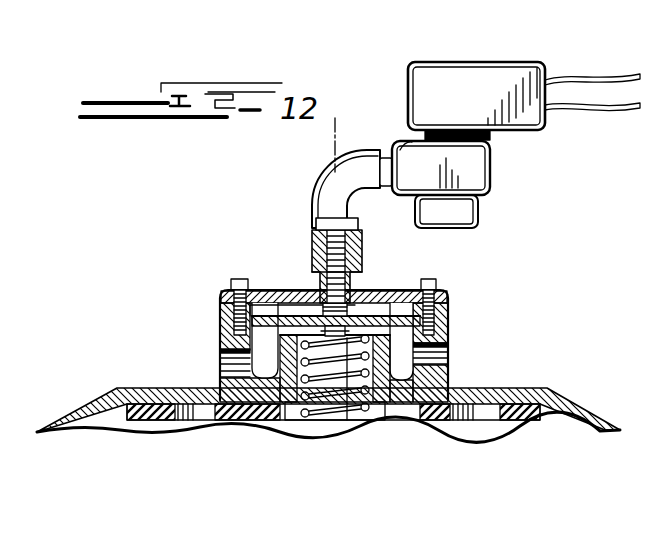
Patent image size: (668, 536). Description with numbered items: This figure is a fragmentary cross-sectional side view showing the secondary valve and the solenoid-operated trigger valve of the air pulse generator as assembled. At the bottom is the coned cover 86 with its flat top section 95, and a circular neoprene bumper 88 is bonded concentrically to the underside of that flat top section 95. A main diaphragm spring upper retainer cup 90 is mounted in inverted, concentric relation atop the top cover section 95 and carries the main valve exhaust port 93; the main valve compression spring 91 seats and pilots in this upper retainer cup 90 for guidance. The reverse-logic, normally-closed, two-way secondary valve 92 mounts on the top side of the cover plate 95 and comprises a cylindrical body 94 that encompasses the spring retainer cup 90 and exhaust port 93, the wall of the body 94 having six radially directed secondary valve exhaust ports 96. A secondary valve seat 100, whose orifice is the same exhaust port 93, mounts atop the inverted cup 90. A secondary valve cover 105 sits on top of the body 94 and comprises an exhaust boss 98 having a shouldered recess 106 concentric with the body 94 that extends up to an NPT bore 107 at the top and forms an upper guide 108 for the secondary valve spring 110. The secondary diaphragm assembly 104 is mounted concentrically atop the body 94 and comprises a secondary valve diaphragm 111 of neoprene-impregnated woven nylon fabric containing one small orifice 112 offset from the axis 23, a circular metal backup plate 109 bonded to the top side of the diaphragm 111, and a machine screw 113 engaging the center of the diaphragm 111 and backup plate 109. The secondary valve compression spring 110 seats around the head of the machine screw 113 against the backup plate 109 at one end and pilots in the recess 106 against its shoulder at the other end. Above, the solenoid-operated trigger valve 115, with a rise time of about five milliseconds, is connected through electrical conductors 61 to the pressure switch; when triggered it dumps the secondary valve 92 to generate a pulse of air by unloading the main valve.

The axis 23 is at (335, 135).
The electrical conductors 61 is at (588, 110).
The coned cover 86 is at (585, 408).
The neoprene bumper 88 is at (455, 412).
The main diaphragm spring upper retainer cup 90 is at (222, 365).
The main valve compression spring 91 is at (333, 418).
The secondary valve 92 is at (481, 266).
The main valve exhaust port 93 is at (300, 422).
The cylindrical body 94 is at (452, 345).
The flat top section 95 is at (510, 390).
The secondary valve exhaust ports 96 is at (428, 378).
The exhaust boss 98 is at (364, 252).
The secondary valve seat 100 is at (398, 327).
The secondary diaphragm assembly 104 is at (203, 317).
The secondary valve cover 105 is at (300, 290).
The shouldered recess 106 is at (410, 268).
The NPT bore 107 is at (355, 222).
The upper guide 108 is at (306, 238).
The backup plate 109 is at (296, 292).
The secondary valve spring 110 is at (445, 333).
The secondary valve diaphragm 111 is at (262, 287).
The orifice 112 is at (347, 425).
The machine screw 113 is at (312, 306).
The solenoid-operated trigger valve 115 is at (374, 101).